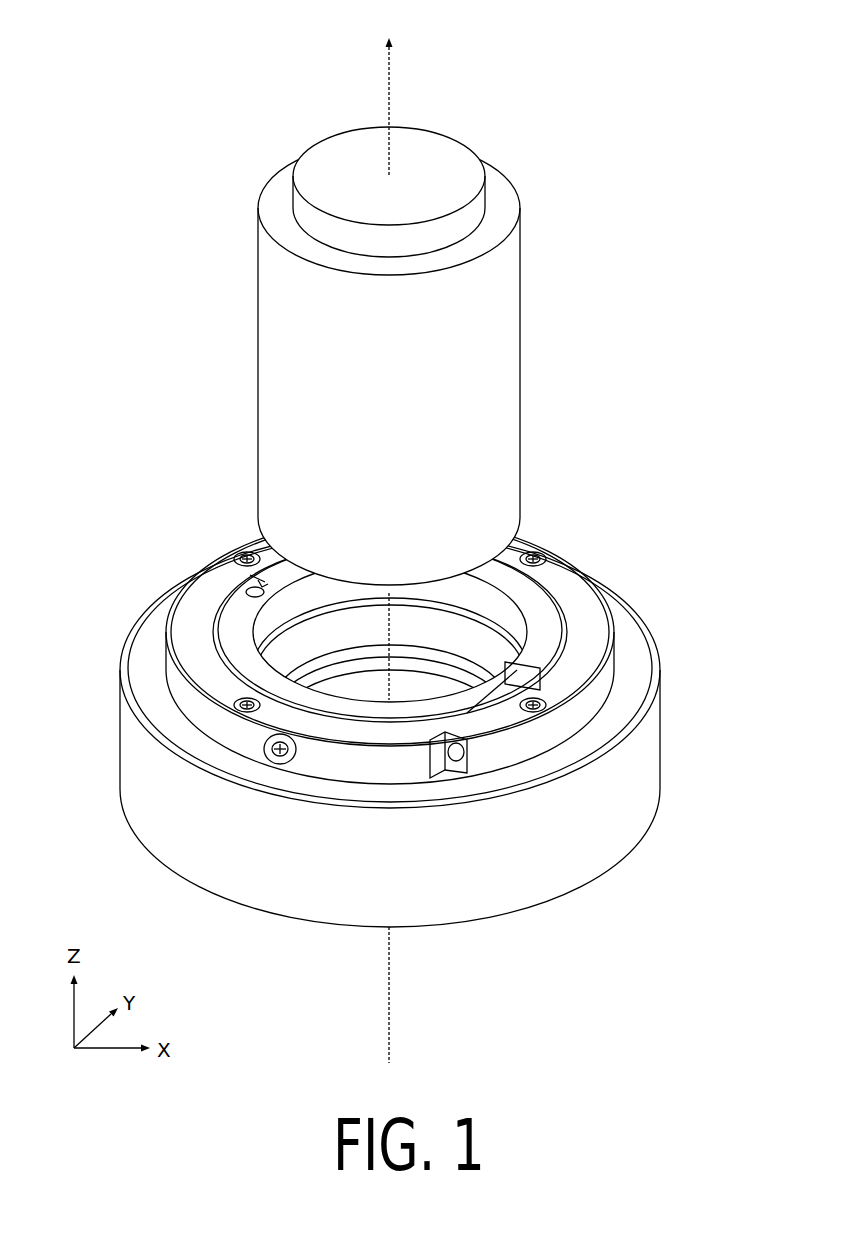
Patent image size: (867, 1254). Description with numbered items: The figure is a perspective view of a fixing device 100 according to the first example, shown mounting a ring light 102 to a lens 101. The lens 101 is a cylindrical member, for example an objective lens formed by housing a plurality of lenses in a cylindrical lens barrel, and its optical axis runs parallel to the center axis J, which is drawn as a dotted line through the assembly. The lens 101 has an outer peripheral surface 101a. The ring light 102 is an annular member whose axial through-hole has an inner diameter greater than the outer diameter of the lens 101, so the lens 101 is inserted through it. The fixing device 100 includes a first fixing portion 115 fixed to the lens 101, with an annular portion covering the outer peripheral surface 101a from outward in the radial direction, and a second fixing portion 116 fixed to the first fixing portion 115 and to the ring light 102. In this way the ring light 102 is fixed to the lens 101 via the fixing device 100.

The fixing device 100 is at (437, 527).
The lens 101 is at (387, 356).
The outer peripheral surface 101a is at (300, 403).
The ring light 102 is at (645, 772).
The first fixing portion 115 is at (550, 583).
The second fixing portion 116 is at (617, 608).
The center axis J is at (389, 92).